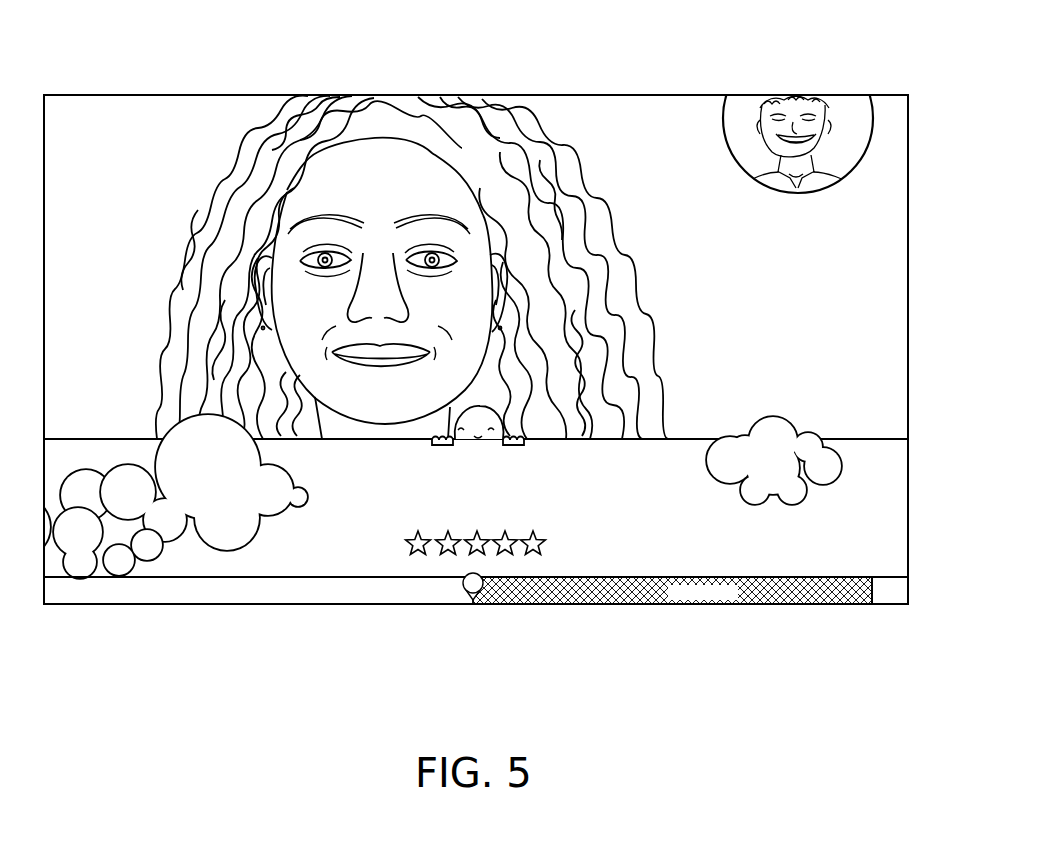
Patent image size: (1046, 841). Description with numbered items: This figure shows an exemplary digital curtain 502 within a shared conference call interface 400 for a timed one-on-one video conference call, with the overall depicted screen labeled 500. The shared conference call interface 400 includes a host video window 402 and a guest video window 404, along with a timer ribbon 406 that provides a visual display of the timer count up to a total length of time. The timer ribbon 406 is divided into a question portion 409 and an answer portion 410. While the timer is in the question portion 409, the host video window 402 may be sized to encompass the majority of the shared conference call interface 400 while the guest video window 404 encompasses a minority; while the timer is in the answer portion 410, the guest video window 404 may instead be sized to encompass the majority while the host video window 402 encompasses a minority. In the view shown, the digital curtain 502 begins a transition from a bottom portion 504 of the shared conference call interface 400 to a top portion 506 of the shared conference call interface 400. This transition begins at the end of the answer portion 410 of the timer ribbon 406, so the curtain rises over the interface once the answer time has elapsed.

The user interface screen 500 is at (498, 65).
The shared conference call interface 400 is at (908, 131).
The top portion 506 is at (609, 96).
The host video window 402 is at (843, 188).
The guest video window 404 is at (877, 340).
The digital curtain 502 is at (883, 505).
The timer ribbon 406 is at (400, 604).
The question portion 409 is at (247, 603).
The answer portion 410 is at (755, 604).
The bottom portion 504 is at (887, 606).